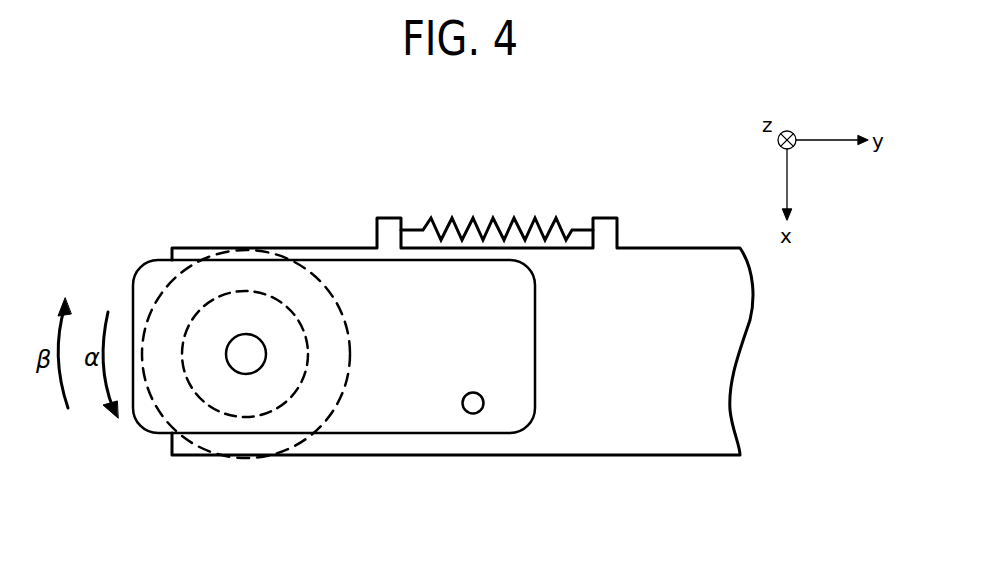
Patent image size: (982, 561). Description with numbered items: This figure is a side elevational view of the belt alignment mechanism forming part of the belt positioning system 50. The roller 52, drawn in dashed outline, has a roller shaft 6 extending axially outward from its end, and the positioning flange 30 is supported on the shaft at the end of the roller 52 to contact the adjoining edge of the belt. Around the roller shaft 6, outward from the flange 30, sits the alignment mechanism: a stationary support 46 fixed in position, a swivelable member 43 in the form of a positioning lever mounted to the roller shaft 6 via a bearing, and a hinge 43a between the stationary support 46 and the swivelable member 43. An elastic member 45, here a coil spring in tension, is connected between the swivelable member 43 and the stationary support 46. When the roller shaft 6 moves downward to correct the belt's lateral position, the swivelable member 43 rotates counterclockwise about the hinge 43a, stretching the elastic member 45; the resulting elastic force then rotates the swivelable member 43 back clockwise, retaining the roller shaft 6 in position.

The roller shaft 6 is at (245, 360).
The positioning flange 30 is at (151, 275).
The swivelable member 43 is at (356, 436).
The hinge 43a is at (471, 415).
The elastic member 45 is at (520, 231).
The stationary support 46 is at (674, 246).
The belt positioning system 50 is at (173, 189).
The roller 52 is at (236, 289).